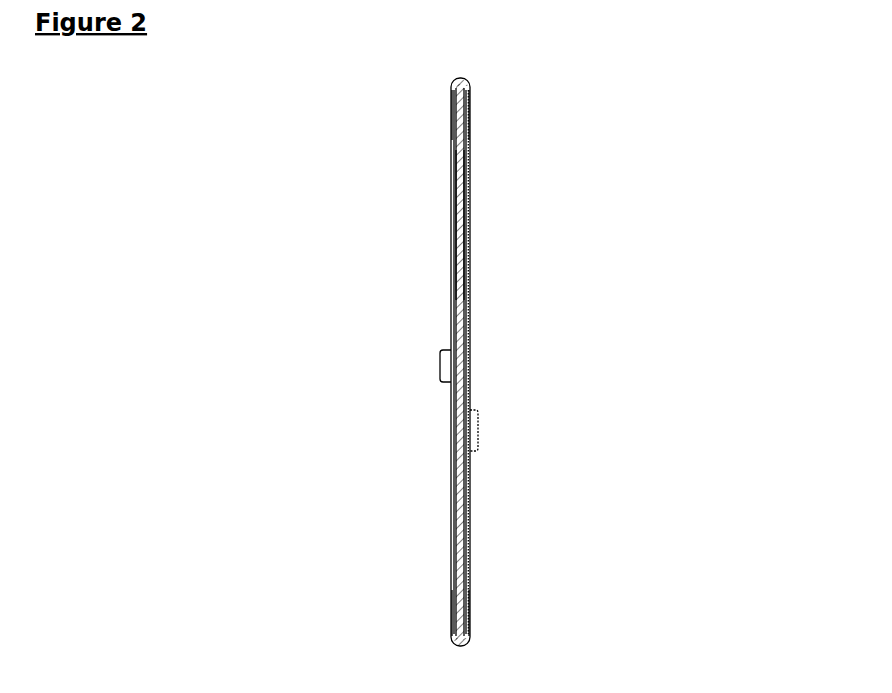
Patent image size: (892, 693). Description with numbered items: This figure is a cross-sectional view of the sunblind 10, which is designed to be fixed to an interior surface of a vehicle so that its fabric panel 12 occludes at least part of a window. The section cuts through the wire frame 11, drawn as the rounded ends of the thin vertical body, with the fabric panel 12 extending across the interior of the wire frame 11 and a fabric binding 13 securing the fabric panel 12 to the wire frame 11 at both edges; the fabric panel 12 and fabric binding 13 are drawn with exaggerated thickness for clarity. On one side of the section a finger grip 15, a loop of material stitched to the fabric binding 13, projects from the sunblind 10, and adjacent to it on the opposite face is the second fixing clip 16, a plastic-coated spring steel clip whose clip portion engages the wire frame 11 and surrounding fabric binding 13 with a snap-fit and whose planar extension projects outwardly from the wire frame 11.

The sunblind 10 is at (662, 137).
The wire frame 11 is at (467, 92).
The fabric panel 12 is at (458, 236).
The fabric binding 13 is at (452, 104).
The finger grip 15 is at (447, 365).
The second fixing clip 16 is at (472, 428).